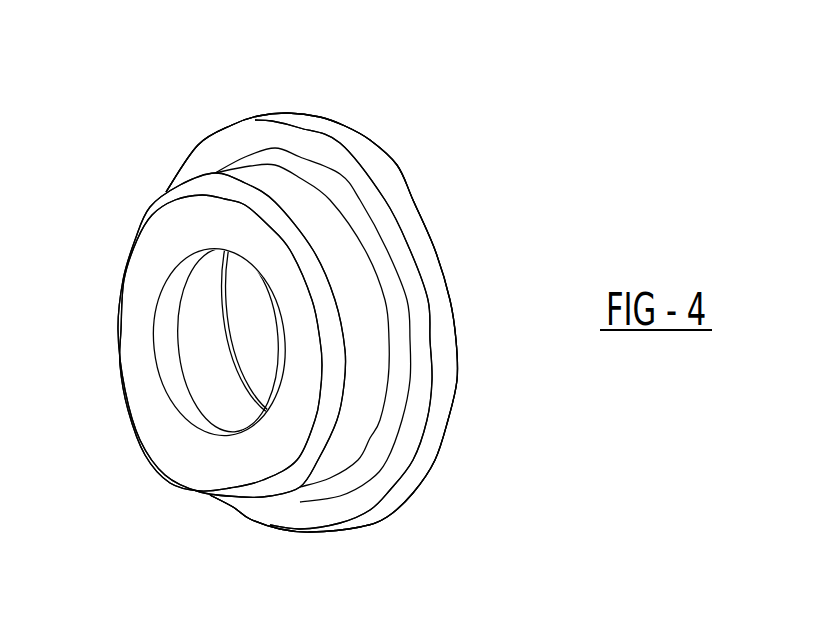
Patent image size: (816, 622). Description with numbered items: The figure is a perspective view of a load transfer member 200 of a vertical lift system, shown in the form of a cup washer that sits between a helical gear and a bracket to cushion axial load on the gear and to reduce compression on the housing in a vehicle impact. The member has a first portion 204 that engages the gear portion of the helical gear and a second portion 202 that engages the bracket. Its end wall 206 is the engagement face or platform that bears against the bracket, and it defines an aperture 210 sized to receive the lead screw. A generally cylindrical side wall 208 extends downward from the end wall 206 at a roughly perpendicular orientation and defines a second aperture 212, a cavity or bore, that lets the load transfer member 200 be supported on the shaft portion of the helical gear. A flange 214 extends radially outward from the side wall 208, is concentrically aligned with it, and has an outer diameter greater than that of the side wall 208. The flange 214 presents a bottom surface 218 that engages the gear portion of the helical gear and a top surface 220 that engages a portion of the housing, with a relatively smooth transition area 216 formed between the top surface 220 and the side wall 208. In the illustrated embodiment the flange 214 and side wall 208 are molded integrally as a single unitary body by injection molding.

The load transfer member 200 is at (332, 92).
The second portion 202 is at (413, 197).
The first portion 204 is at (177, 435).
The end wall 206 is at (135, 333).
The side wall 208 is at (322, 220).
The aperture 210 is at (182, 383).
The aperture 212 is at (240, 297).
The flange 214 is at (437, 427).
The transition area 216 is at (388, 285).
The bottom surface 218 is at (482, 352).
The top surface 220 is at (292, 520).